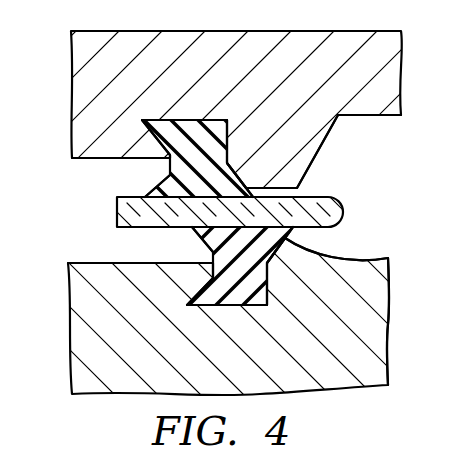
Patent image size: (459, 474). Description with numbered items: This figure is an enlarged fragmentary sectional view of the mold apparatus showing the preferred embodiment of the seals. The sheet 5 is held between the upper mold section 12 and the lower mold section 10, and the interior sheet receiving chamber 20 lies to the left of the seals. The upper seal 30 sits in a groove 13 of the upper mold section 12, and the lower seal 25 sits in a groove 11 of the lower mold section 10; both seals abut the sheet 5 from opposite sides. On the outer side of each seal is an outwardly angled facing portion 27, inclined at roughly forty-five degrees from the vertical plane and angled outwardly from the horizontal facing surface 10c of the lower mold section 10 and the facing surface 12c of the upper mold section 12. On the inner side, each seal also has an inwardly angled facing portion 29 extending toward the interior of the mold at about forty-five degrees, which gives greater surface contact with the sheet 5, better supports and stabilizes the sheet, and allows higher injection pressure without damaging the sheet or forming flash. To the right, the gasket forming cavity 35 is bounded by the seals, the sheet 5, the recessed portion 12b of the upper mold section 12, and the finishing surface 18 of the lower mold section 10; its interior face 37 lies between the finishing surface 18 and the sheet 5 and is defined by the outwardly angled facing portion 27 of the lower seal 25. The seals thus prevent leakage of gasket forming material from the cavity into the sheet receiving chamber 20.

The lower mold section 10 is at (131, 363).
The facing surface of the lower mold section 10c is at (68, 264).
The groove 11 is at (218, 307).
The upper mold section 12 is at (348, 75).
The recessed portion of the upper mold section 12b is at (398, 118).
The facing surface of the upper mold section 12c is at (87, 160).
The groove 13 is at (176, 120).
The finishing surface 18 is at (388, 258).
The sheet receiving chamber 20 is at (53, 225).
The lower seal 25 is at (255, 258).
The outwardly angled facing portion 27 is at (242, 182).
The inwardly angled facing portion 29 is at (152, 192).
The upper seal 30 is at (215, 173).
The gasket forming cavity 35 is at (361, 178).
The interior face of the gasket forming cavity 37 is at (292, 236).
The sheet 5 is at (117, 212).